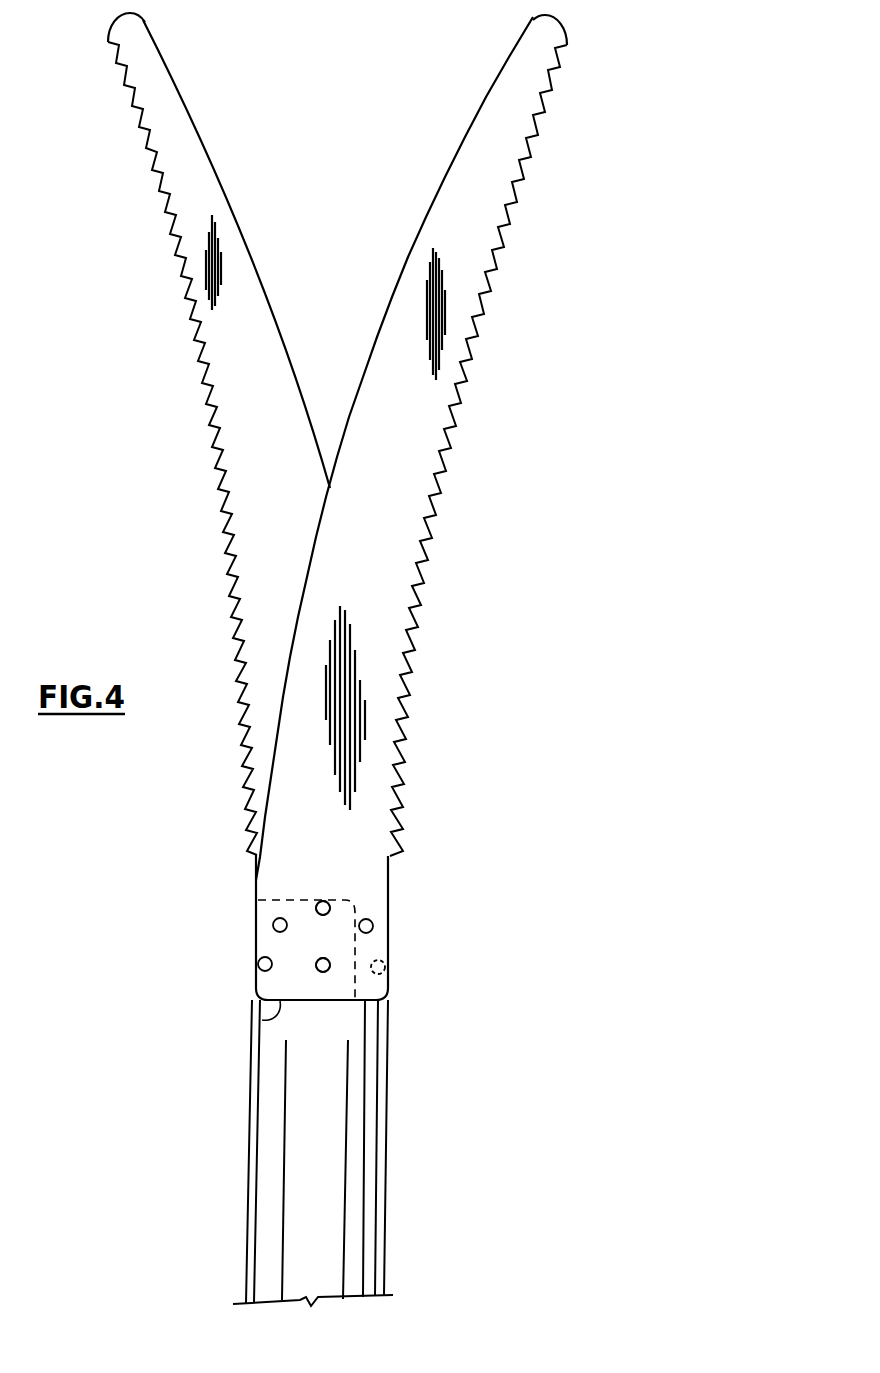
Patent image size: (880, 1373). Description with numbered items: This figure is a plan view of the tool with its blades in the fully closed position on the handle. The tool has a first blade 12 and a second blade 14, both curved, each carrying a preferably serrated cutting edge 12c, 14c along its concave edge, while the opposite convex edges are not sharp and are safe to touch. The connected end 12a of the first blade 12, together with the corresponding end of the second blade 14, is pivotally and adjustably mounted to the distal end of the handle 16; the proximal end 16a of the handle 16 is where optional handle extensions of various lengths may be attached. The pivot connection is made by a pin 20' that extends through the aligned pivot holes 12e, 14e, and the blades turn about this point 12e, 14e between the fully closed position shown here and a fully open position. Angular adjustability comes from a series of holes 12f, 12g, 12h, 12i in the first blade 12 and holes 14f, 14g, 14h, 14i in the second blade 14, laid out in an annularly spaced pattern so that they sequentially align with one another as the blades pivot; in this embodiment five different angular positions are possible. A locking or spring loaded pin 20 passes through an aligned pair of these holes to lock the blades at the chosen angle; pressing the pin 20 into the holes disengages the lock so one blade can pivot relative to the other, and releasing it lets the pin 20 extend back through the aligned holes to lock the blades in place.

The first blade 12 is at (411, 507).
The second blade 14 is at (207, 434).
The serrated cutting edge 12c is at (470, 337).
The serrated cutting edge 14c is at (186, 312).
The connected end 12a is at (343, 1005).
The hole 12g is at (321, 874).
The hole 14g is at (318, 906).
The hole 12h is at (205, 906).
The hole 14f is at (273, 925).
The hole 12f is at (442, 907).
The hole 14h is at (373, 926).
The hole 12i is at (262, 964).
The hole 14i is at (385, 962).
The pivot hole 12e is at (414, 992).
The pivot hole 14e is at (330, 970).
The pin 20 is at (404, 874).
The pin 20' is at (317, 1015).
The handle 16 is at (270, 1082).
The proximal end 16a is at (262, 1020).